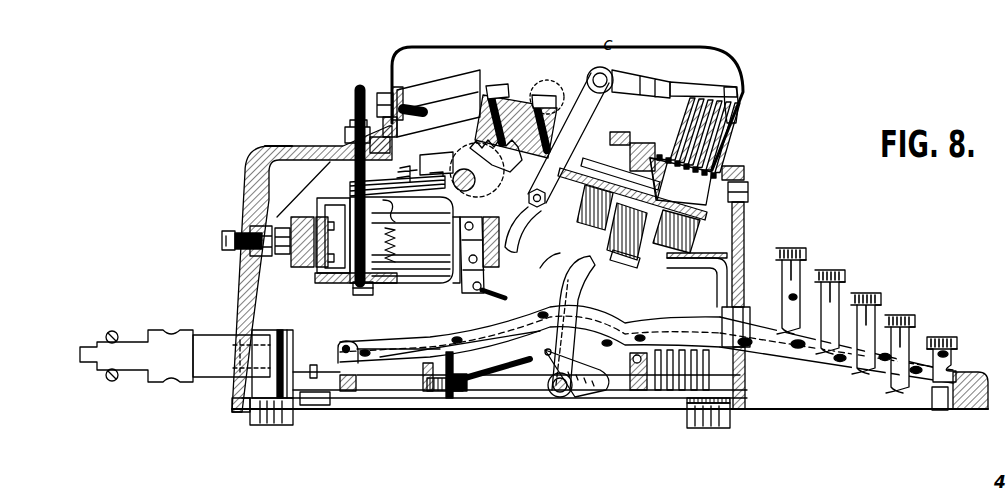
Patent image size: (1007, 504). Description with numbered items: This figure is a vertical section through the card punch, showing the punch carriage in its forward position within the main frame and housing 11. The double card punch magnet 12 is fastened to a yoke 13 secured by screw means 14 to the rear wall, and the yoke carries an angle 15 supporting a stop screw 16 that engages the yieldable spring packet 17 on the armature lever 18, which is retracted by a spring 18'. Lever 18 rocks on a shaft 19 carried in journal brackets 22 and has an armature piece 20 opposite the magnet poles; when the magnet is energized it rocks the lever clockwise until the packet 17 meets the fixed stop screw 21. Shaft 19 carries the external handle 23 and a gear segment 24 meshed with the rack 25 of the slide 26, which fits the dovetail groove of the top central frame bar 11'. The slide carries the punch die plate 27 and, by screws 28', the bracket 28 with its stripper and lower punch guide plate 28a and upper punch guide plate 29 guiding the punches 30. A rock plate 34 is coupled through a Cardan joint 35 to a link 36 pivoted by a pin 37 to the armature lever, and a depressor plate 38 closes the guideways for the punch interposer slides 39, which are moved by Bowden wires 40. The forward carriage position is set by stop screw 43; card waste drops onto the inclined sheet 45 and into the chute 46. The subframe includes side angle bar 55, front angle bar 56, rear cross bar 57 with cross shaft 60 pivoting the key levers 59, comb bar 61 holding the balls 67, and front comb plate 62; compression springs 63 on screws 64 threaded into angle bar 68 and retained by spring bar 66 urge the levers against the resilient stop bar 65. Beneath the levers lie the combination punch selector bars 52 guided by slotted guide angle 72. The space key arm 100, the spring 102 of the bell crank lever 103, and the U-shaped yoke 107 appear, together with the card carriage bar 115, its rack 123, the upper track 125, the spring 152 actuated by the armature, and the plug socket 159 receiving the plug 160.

The main frame and housing 11 is at (280, 269).
The top central frame bar 11' is at (556, 100).
The double card punch magnet 12 is at (325, 197).
The yoke 13 is at (268, 148).
The screw means 14 is at (228, 242).
The angle 15 is at (262, 270).
The stop screw 16 is at (328, 277).
The yieldable spring packet 17 is at (353, 190).
The armature lever 18 is at (440, 240).
The spring 18' is at (405, 240).
The shaft 19 is at (458, 158).
The armature piece 20 is at (467, 262).
The fixed stop screw 21 is at (357, 120).
The journal brackets 22 is at (437, 151).
The external handle 23 is at (545, 85).
The gear segment 24 is at (466, 148).
The rack 25 is at (516, 222).
The slide 26 is at (618, 132).
The punch die plate 27 is at (714, 167).
The bracket 28 is at (516, 83).
The screws 28' is at (497, 99).
The stripper and lower punch guide plate 28a is at (640, 143).
The upper punch guide plate 29 is at (733, 130).
The punches 30 is at (733, 113).
The rock plate 34 is at (650, 82).
The Cardan joint 35 is at (592, 70).
The link 36 is at (568, 162).
The pin 37 is at (547, 201).
The depressor plate 38 is at (717, 92).
The punch interposer slides 39 is at (700, 84).
The Bowden wires 40 is at (921, 503).
The stop screw 43 is at (750, 198).
The inclined sheet 45 is at (745, 178).
The chute 46 is at (745, 230).
The combination punch selector bars 52 is at (667, 383).
The side angle bar 55 is at (380, 397).
The front angle bar 56 is at (744, 400).
The rear cross bar 57 is at (343, 392).
The key levers 59 is at (513, 323).
The cross shaft 60 is at (347, 341).
The comb bar 61 is at (633, 392).
The front comb plate 62 is at (750, 383).
The compression springs 63 is at (447, 363).
The screws 64 is at (460, 392).
The stop bar 65 is at (748, 293).
The spring bar 66 is at (449, 396).
The balls 67 is at (663, 387).
The angle bar 68 is at (424, 392).
The slotted guide angle 72 is at (740, 411).
The arm 100 is at (553, 287).
The spring 102 is at (487, 373).
The bell crank lever 103 is at (590, 392).
The U-shaped yoke 107 is at (573, 275).
The bar 115 is at (681, 181).
The rack 123 is at (702, 250).
The upper track 125 is at (578, 218).
The spring 152 is at (493, 291).
The plug socket 159 is at (277, 377).
The plug 160 is at (173, 362).